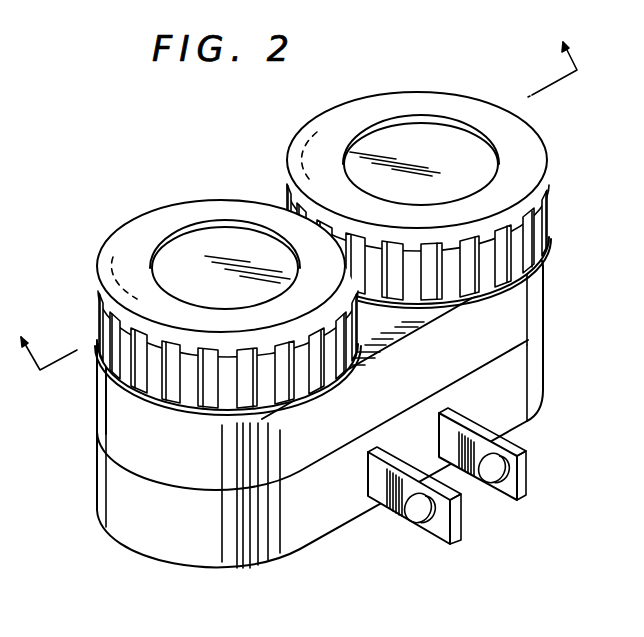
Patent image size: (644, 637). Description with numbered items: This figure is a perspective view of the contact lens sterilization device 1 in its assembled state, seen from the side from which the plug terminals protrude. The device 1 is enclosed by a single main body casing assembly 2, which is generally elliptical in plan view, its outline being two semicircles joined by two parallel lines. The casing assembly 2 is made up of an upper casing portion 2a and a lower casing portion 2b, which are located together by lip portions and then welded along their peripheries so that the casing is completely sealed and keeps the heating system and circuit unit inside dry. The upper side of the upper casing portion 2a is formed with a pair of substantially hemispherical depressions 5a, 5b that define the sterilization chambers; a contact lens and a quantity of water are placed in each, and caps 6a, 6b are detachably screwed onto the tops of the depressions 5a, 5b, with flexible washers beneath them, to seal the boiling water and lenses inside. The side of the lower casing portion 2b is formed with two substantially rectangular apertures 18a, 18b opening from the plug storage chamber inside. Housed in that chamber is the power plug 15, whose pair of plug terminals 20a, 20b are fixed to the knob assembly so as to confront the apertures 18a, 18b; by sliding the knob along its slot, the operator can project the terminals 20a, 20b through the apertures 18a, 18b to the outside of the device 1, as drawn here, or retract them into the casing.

The contact lens sterilization device 1 is at (49, 166).
The main body casing assembly 2 is at (92, 464).
The upper casing portion 2a is at (97, 411).
The lower casing portion 2b is at (225, 553).
The hemispherical depression 5a is at (172, 263).
The hemispherical depression 5b is at (468, 180).
The cap 6a is at (205, 200).
The cap 6b is at (447, 92).
The power plug 15 is at (419, 538).
The rectangular aperture 18a is at (373, 487).
The rectangular aperture 18b is at (450, 413).
The plug terminal 20a is at (461, 522).
The plug terminal 20b is at (527, 456).